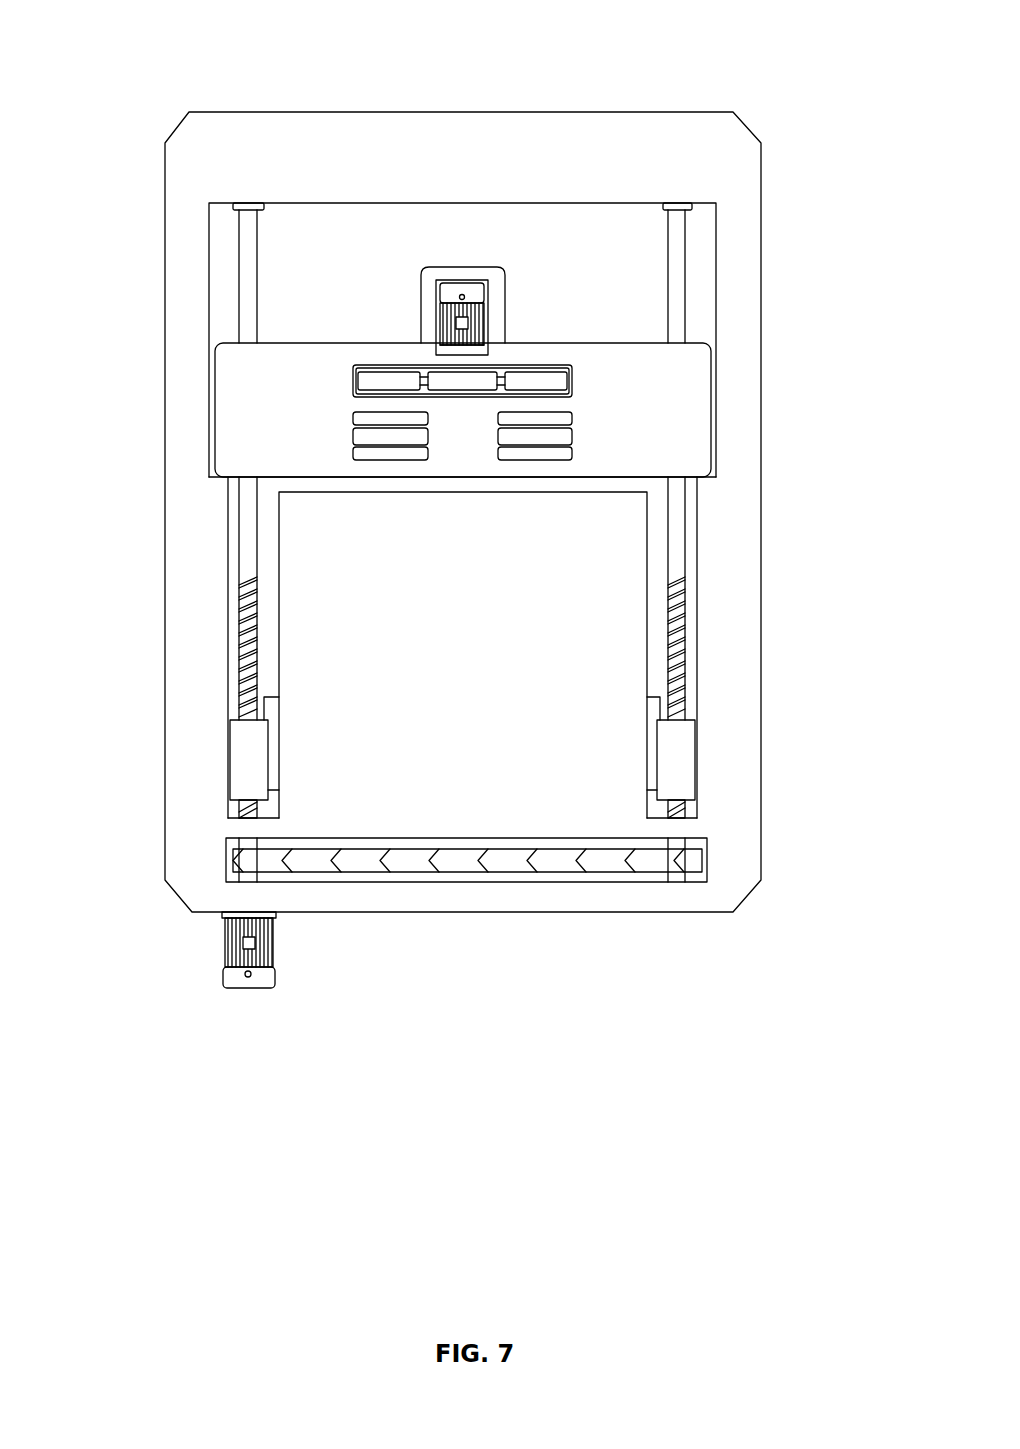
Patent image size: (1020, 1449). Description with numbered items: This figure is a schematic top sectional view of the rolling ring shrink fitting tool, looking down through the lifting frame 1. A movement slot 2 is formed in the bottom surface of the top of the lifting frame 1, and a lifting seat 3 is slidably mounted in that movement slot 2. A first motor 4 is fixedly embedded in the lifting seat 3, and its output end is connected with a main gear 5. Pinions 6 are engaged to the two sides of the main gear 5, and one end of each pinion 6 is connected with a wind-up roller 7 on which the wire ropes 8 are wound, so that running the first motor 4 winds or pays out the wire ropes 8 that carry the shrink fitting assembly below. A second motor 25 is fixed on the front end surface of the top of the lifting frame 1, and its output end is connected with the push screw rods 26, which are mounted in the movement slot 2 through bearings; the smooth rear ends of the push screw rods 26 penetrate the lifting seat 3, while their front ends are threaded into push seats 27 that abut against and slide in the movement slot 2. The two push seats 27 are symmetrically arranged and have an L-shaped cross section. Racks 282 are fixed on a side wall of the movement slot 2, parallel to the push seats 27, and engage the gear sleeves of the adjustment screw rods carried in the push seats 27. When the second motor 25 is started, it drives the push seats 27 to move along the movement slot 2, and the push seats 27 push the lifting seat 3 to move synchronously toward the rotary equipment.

The lifting frame 1 is at (531, 512).
The movement slot 2 is at (451, 453).
The lifting seat 3 is at (506, 240).
The first motor 4 is at (522, 177).
The main gear 5 is at (475, 511).
The pinion 6 is at (300, 484).
The wind-up roller 7 is at (698, 345).
The wire rope 8 is at (230, 576).
The second motor 25 is at (340, 979).
The push screw rod 26 is at (578, 647).
The push seat 27 is at (360, 811).
The rack 282 is at (462, 693).